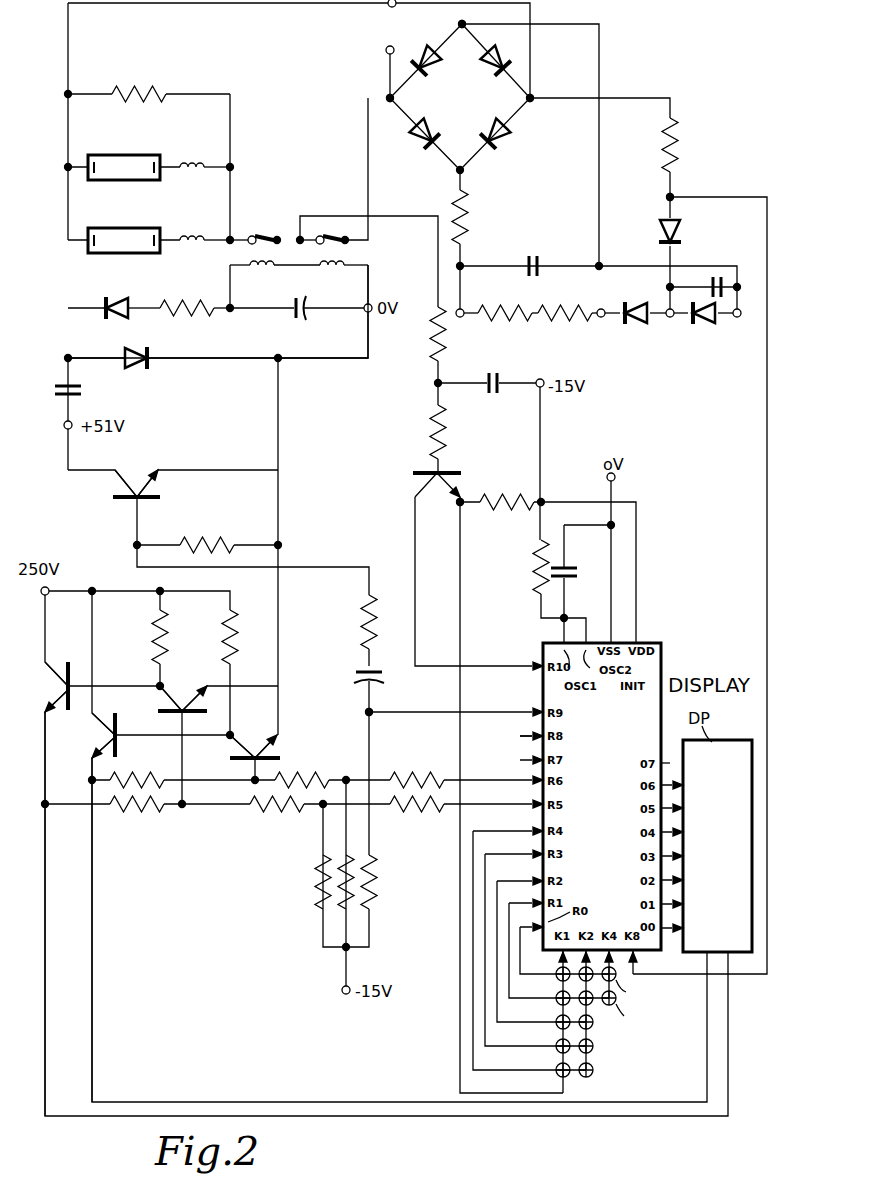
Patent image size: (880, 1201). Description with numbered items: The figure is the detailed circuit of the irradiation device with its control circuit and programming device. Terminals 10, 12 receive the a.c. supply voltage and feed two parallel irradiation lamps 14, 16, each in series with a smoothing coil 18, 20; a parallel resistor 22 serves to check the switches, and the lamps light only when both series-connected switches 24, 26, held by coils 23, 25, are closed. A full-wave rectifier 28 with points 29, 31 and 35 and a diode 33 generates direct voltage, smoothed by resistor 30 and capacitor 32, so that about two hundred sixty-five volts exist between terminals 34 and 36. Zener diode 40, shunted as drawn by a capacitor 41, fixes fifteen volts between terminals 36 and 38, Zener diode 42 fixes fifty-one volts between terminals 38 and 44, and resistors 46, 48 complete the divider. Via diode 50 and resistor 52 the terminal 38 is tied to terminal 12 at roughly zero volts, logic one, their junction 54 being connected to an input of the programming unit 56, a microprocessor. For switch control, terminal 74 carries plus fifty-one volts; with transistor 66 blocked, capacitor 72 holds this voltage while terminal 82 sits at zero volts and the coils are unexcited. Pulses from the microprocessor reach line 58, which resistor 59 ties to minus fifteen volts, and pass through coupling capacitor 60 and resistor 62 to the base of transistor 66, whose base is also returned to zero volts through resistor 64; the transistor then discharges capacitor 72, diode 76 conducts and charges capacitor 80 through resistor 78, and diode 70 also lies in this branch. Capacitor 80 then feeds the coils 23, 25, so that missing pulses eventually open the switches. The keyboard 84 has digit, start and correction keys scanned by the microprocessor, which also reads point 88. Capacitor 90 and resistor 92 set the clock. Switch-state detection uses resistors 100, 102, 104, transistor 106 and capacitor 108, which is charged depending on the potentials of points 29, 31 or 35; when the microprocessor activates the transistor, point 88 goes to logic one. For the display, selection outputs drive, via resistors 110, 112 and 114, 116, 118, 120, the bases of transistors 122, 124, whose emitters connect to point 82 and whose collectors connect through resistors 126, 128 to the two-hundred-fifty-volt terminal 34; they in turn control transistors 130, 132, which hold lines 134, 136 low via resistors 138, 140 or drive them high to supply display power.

The terminal 10 is at (386, 50).
The terminal 12 is at (390, 8).
The a.c. irradiation lamp 14 is at (109, 231).
The a.c. irradiation lamp 16 is at (110, 158).
The smoothing coil 18 is at (204, 236).
The smoothing coil 20 is at (204, 163).
The parallel resistor 22 is at (135, 86).
The coil 23 is at (262, 262).
The switch 24 is at (260, 234).
The coil 25 is at (337, 262).
The switch 26 is at (328, 232).
The full-wave rectifier 28 is at (448, 140).
The point 29 is at (385, 115).
The resistor 30 is at (470, 210).
The point 31 is at (460, 23).
The capacitor 32 is at (540, 262).
The diode 33 is at (422, 58).
The terminal 34 is at (460, 318).
The point 35 is at (530, 104).
The terminal 36 is at (737, 318).
The terminal 38 is at (670, 318).
The Zener diode 40 is at (708, 320).
The capacitor 41 is at (724, 278).
The Zener diode 42 is at (640, 320).
The terminal 44 is at (601, 318).
The resistor 46 is at (515, 320).
The resistor 48 is at (572, 320).
The diode 50 is at (680, 222).
The resistor 52 is at (678, 148).
The junction 54 is at (666, 197).
The programming unit 56 is at (520, 736).
The line 58 is at (366, 716).
The resistor 59 is at (378, 874).
The capacitor 60 is at (356, 678).
The resistor 62 is at (358, 628).
The resistor 64 is at (220, 540).
The transistor 66 is at (150, 482).
The diode 70 is at (134, 364).
The capacitor 72 is at (80, 388).
The terminal 74 is at (64, 426).
The diode 76 is at (118, 304).
The resistor 78 is at (176, 300).
The capacitor 80 is at (306, 318).
The terminal 82 is at (371, 314).
The keyboard 84 is at (612, 1044).
The point 88 is at (464, 506).
The capacitor 90 is at (572, 564).
The resistor 92 is at (534, 562).
The resistor 100 is at (430, 318).
The resistor 102 is at (444, 416).
The resistor 104 is at (484, 500).
The transistor 106 is at (446, 480).
The capacitor 108 is at (499, 390).
The resistor 110 is at (404, 814).
The resistor 112 is at (394, 772).
The resistor 114 is at (315, 876).
The resistor 116 is at (340, 900).
The resistor 118 is at (270, 814).
The resistor 120 is at (302, 776).
The transistor 122 is at (252, 750).
The transistor 124 is at (182, 694).
The resistor 126 is at (154, 642).
The resistor 128 is at (226, 642).
The transistor 130 is at (120, 716).
The transistor 132 is at (66, 668).
The line 134 is at (44, 1006).
The line 136 is at (92, 1006).
The resistor 138 is at (136, 814).
The resistor 140 is at (142, 776).